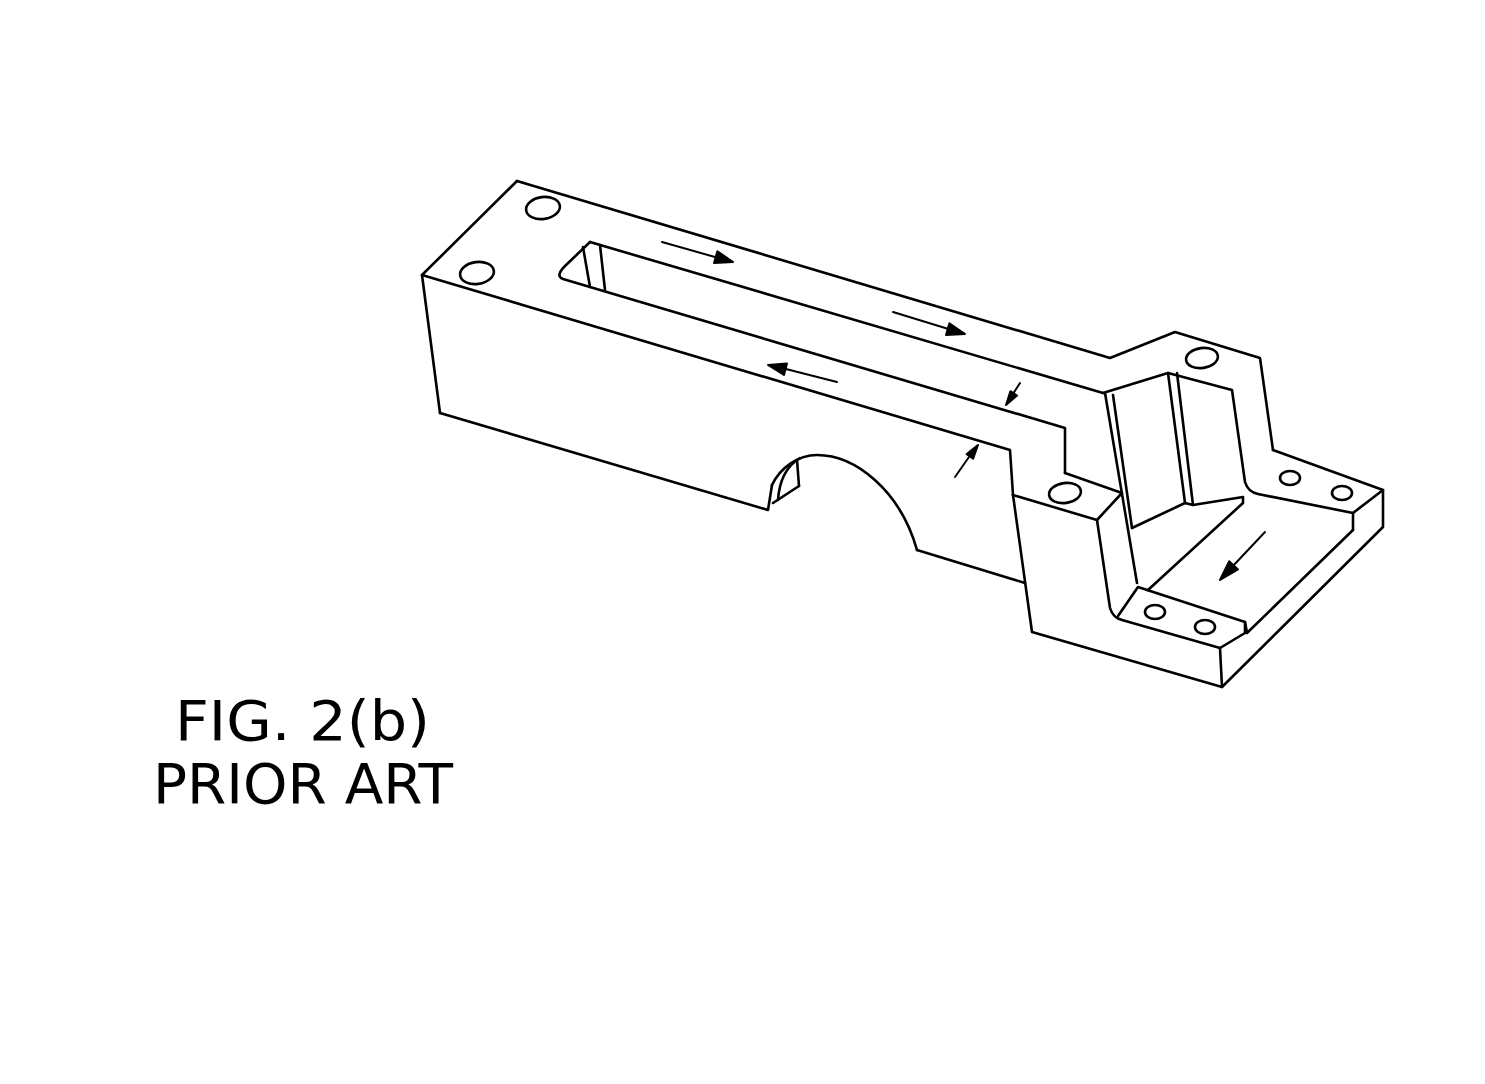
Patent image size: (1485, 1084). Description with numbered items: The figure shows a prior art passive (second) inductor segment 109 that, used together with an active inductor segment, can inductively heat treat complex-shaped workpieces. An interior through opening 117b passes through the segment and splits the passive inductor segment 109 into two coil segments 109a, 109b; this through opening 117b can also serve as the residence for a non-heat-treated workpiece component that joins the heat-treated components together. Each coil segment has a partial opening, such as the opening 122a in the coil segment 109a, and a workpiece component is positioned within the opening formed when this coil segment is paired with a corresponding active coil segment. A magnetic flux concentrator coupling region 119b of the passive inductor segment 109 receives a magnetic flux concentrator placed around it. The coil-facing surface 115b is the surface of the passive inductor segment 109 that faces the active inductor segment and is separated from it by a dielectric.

The passive (second) inductor segment 109 is at (938, 374).
The coil segment 109a is at (697, 448).
The coil segment 109b is at (990, 296).
The coil-facing surface 115b is at (612, 463).
The interior through opening 117b is at (858, 345).
The magnetic flux concentrator coupling region 119b is at (1265, 565).
The opening 122a is at (827, 530).